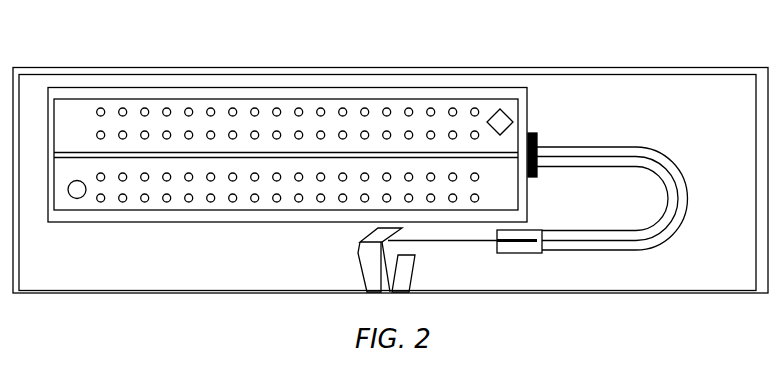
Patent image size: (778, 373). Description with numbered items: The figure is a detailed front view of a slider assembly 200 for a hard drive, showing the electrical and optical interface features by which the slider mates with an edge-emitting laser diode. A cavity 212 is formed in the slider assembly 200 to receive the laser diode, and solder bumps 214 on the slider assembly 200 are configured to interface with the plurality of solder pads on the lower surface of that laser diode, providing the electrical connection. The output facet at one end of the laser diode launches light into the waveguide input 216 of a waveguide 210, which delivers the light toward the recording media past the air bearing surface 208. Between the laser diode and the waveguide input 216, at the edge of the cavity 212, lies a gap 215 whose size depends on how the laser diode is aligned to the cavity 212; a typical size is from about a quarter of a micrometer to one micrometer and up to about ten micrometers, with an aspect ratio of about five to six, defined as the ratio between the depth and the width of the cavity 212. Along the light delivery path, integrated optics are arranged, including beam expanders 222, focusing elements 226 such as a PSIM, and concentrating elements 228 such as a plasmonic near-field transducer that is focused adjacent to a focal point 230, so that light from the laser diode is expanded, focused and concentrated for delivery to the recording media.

The slider assembly 200 is at (137, 49).
The air bearing surface 208 is at (622, 293).
The waveguide 210 is at (650, 148).
The cavity 212 is at (223, 93).
The solder bumps 214 is at (431, 108).
The gap 215 is at (531, 132).
The waveguide input 216 is at (539, 144).
The beam expanders 222 is at (535, 253).
The focusing elements 226 is at (383, 241).
The concentrating elements 228 is at (380, 277).
The focal point 230 is at (392, 292).